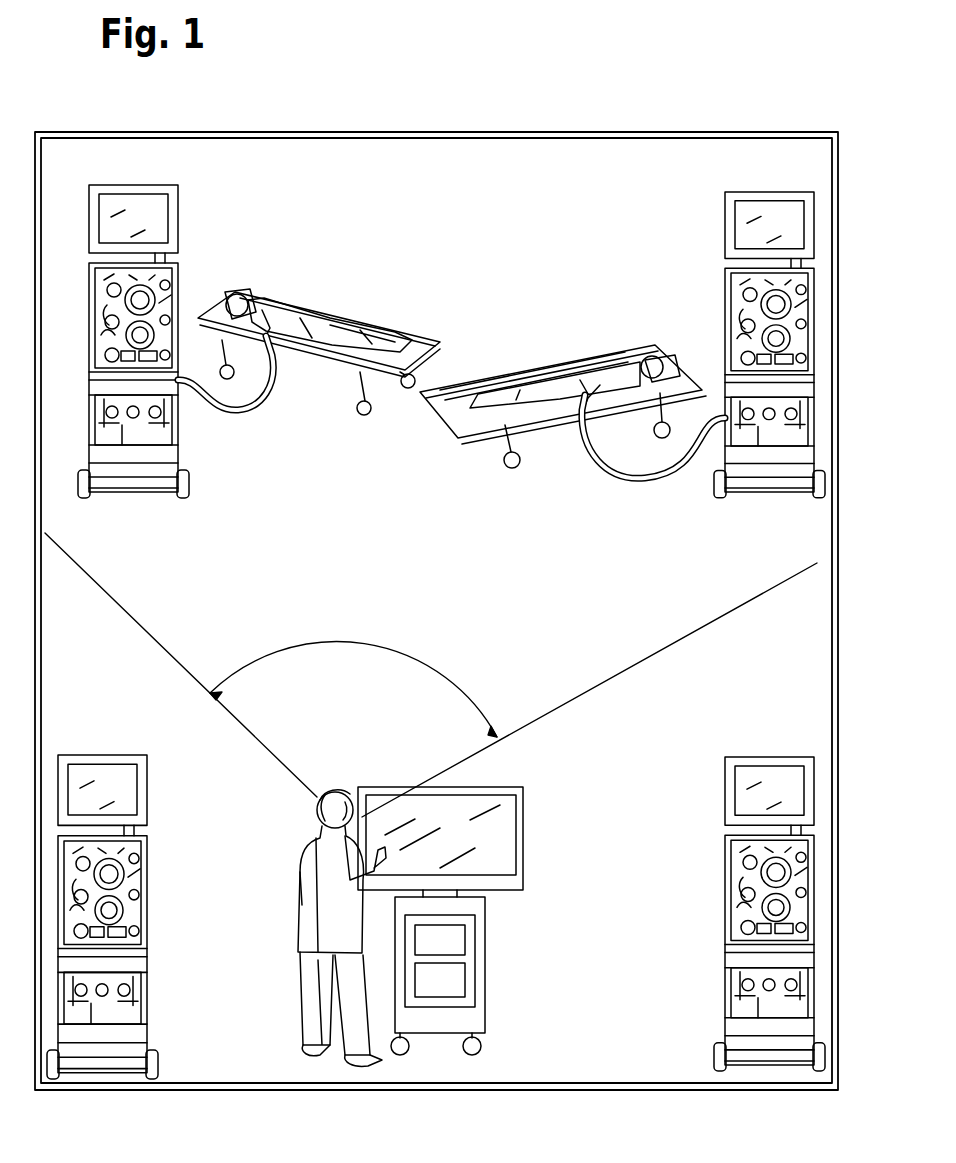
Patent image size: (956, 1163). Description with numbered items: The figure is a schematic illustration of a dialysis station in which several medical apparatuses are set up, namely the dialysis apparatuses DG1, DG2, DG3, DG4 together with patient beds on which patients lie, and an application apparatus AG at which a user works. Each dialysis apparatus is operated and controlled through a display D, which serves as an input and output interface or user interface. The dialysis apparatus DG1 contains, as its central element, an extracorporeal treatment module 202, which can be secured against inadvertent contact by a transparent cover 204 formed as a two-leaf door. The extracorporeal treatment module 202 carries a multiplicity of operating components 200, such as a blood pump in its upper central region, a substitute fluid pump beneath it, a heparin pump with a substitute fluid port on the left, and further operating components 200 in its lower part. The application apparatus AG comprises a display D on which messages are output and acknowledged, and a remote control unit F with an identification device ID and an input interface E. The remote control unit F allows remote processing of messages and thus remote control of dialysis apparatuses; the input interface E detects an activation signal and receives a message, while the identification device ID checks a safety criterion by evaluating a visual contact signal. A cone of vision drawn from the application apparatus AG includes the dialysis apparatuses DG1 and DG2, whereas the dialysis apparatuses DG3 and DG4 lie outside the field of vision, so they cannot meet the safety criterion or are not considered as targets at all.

The operating components 200 is at (118, 360).
The extracorporeal treatment module 202 is at (109, 295).
The transparent cover 204 is at (108, 383).
The display D is at (523, 833).
The dialysis apparatus DG1 is at (178, 281).
The dialysis apparatus DG2 is at (725, 285).
The dialysis apparatus DG3 is at (725, 856).
The dialysis apparatus DG4 is at (147, 855).
The application apparatus AG is at (525, 905).
The remote control unit F is at (485, 958).
The input interface E is at (440, 941).
The identification device ID is at (440, 980).